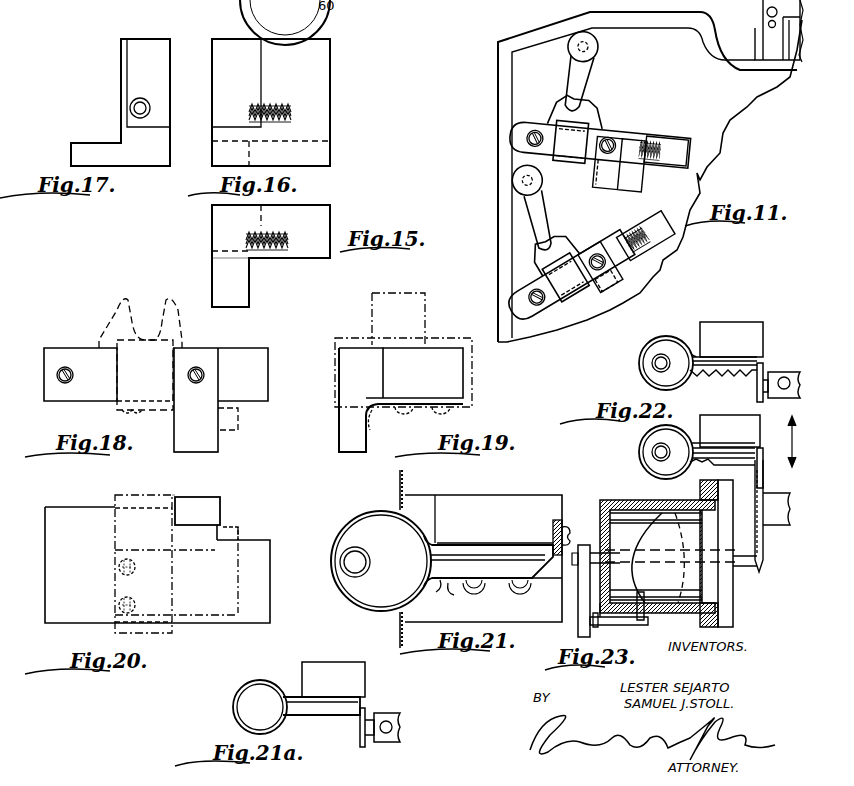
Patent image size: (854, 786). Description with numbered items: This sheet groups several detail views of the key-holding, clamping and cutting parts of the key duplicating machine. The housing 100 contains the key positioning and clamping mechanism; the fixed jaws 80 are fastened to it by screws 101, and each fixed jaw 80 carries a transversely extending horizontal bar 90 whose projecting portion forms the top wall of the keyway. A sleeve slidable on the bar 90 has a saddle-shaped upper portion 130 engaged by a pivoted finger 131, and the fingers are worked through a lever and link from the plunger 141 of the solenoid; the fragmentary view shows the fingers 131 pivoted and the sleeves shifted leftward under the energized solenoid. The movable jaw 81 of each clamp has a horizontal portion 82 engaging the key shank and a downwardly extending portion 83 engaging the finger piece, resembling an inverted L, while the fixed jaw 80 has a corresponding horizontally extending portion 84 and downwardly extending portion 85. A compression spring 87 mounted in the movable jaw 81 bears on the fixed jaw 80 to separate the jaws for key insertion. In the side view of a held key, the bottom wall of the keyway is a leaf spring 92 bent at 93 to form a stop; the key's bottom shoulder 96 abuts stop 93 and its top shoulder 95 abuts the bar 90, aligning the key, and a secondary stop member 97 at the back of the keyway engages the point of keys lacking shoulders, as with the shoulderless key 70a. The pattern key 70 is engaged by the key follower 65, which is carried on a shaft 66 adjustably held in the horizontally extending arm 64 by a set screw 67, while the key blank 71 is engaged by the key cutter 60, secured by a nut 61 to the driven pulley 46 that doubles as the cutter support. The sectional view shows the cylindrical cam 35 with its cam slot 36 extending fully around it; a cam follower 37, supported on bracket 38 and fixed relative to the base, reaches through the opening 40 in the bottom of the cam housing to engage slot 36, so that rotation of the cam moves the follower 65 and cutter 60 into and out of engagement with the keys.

In FIG. 11, the housing 100 is at (587, 20).
In FIG. 11, the plunger 141 is at (730, 38).
In FIG. 11, the finger 131 is at (578, 78).
In FIG. 18, the saddle-shaped upper portion 130 is at (112, 312).
In FIG. 11, the saddle-shaped upper portion 130 is at (592, 110).
In FIG. 18, the screws 101 is at (63, 368).
In FIG. 11, the screws 101 is at (523, 138).
In FIG. 18, the transversely extending horizontal bar 90 is at (262, 378).
In FIG. 19, the transversely extending horizontal bar 90 is at (457, 378).
In FIG. 20, the transversely extending horizontal bar 90 is at (262, 615).
In FIG. 11, the transversely extending horizontal bar 90 is at (603, 181).
In FIG. 18, the fixed jaw 80 is at (220, 445).
In FIG. 20, the fixed jaw 80 is at (196, 497).
In FIG. 11, the fixed jaw 80 is at (592, 173).
In FIG. 16, the movable jaw 81 is at (212, 52).
In FIG. 15, the movable jaw 81 is at (212, 245).
In FIG. 11, the movable jaw 81 is at (687, 141).
In FIG. 17, the horizontal portion 82 is at (121, 76).
In FIG. 17, the downwardly extending portion 83 is at (75, 143).
In FIG. 15, the downwardly extending portion 83 is at (222, 280).
In FIG. 18, the horizontally extending portion 84 is at (240, 424).
In FIG. 19, the horizontally extending portion 84 is at (418, 422).
In FIG. 20, the horizontally extending portion 84 is at (240, 532).
In FIG. 11, the horizontally extending portion 84 is at (594, 295).
In FIG. 18, the downwardly extending portion 85 is at (200, 448).
In FIG. 19, the downwardly extending portion 85 is at (338, 440).
In FIG. 20, the downwardly extending portion 85 is at (212, 510).
In FIG. 17, the compression spring 87 is at (130, 107).
In FIG. 16, the compression spring 87 is at (252, 104).
In FIG. 15, the compression spring 87 is at (280, 250).
In FIG. 11, the compression spring 87 is at (662, 144).
In FIG. 22, the pattern key 70 is at (662, 348).
In FIG. 21A, the key 70a is at (247, 714).
In FIG. 23, the key blank 71 is at (657, 463).
In FIG. 21A, the key follower 65 is at (360, 743).
In FIG. 22, the key follower 65 is at (766, 366).
In FIG. 22, the shaft 66 is at (757, 388).
In FIG. 21A, the horizontally extending arm 64 is at (400, 716).
In FIG. 22, the horizontally extending arm 64 is at (782, 394).
In FIG. 21A, the set screw 67 is at (388, 721).
In FIG. 22, the set screw 67 is at (782, 398).
In FIG. 23, the nut 61 is at (752, 472).
In FIG. 23, the key cutter 60 is at (792, 470).
In FIG. 23, the pulley 46 is at (770, 527).
In FIG. 23, the cam slot 36 is at (636, 520).
In FIG. 23, the cam 35 is at (690, 578).
In FIG. 23, the opening 40 is at (718, 622).
In FIG. 23, the cam follower 37 is at (645, 612).
In FIG. 23, the bracket 38 is at (600, 626).
In FIG. 21, the top shoulder 95 is at (430, 540).
In FIG. 21, the bottom shoulder 96 is at (432, 577).
In FIG. 21, the secondary stop member 97 is at (553, 522).
In FIG. 21, the leaf spring 92 is at (522, 588).
In FIG. 21, the bend 93 is at (446, 590).